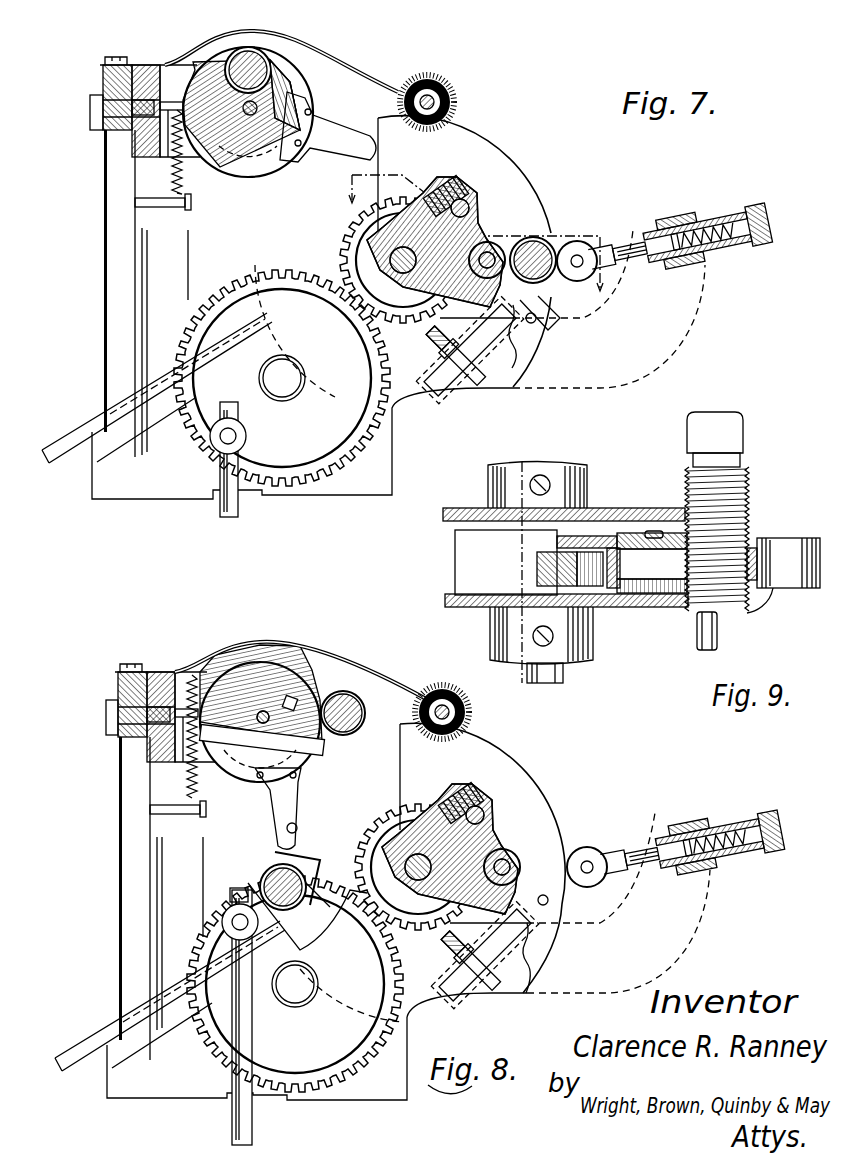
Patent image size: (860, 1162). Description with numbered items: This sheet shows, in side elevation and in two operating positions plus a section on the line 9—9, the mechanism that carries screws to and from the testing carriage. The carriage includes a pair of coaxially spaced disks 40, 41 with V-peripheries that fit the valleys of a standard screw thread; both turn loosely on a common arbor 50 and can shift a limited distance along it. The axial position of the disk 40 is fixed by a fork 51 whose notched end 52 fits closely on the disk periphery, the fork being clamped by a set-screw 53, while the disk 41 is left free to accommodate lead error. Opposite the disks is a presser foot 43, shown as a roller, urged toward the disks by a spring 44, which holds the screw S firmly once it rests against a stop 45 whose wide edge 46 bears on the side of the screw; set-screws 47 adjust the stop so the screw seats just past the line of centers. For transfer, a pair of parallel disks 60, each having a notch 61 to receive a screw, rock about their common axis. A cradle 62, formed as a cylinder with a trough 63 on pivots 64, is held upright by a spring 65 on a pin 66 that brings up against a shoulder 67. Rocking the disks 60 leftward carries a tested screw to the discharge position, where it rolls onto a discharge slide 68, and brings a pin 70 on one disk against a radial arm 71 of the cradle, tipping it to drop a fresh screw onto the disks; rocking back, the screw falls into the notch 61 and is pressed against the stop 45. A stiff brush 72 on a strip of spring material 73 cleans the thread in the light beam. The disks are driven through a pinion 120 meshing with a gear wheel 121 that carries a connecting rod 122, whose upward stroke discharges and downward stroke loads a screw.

In FIG. 9, the disk 40 is at (674, 533).
In FIG. 7, the disk 41 is at (498, 233).
In FIG. 8, the disk 41 is at (512, 853).
In FIG. 9, the disk 41 is at (642, 608).
In FIG. 7, the presser foot 43 is at (588, 243).
In FIG. 8, the presser foot 43 is at (590, 848).
In FIG. 9, the presser foot 43 is at (787, 547).
In FIG. 7, the spring 44 is at (700, 222).
In FIG. 8, the spring 44 is at (735, 820).
In FIG. 7, the stop 45 is at (528, 343).
In FIG. 8, the stop 45 is at (558, 915).
In FIG. 7, the edge 46 is at (537, 318).
In FIG. 8, the edge 46 is at (544, 893).
In FIG. 7, the set-screws 47 is at (447, 392).
In FIG. 8, the set-screws 47 is at (500, 998).
In FIG. 9, the arbor 50 is at (655, 533).
In FIG. 7, the fork 51 is at (486, 196).
In FIG. 8, the fork 51 is at (500, 838).
In FIG. 9, the fork 51 is at (598, 508).
In FIG. 9, the notched end 52 is at (650, 532).
In FIG. 7, the set-screw 53 is at (440, 178).
In FIG. 8, the set-screw 53 is at (447, 797).
In FIG. 9, the set-screw 53 is at (537, 568).
In FIG. 7, the transfer disks 60 is at (485, 138).
In FIG. 8, the transfer disks 60 is at (500, 748).
In FIG. 9, the transfer disks 60 is at (467, 508).
In FIG. 7, the notch 61 is at (528, 238).
In FIG. 8, the notch 61 is at (262, 870).
In FIG. 7, the cradle 62 is at (207, 60).
In FIG. 8, the cradle 62 is at (255, 645).
In FIG. 7, the trough 63 is at (220, 60).
In FIG. 8, the trough 63 is at (292, 648).
In FIG. 7, the pivots 64 is at (278, 60).
In FIG. 8, the pivots 64 is at (343, 713).
In FIG. 7, the spring 65 is at (183, 176).
In FIG. 8, the spring 65 is at (196, 770).
In FIG. 7, the pin 66 is at (172, 93).
In FIG. 8, the pin 66 is at (232, 645).
In FIG. 7, the shoulder 67 is at (174, 160).
In FIG. 8, the shoulder 67 is at (190, 690).
In FIG. 7, the discharge slide 68 is at (88, 420).
In FIG. 8, the discharge slide 68 is at (100, 1022).
In FIG. 7, the pin 70 is at (545, 292).
In FIG. 8, the pin 70 is at (299, 828).
In FIG. 7, the radial arm 71 is at (348, 136).
In FIG. 8, the radial arm 71 is at (300, 803).
In FIG. 7, the brush 72 is at (433, 74).
In FIG. 8, the brush 72 is at (440, 682).
In FIG. 7, the strip of spring material 73 is at (351, 70).
In FIG. 8, the strip of spring material 73 is at (318, 650).
In FIG. 7, the pinion 120 is at (340, 262).
In FIG. 8, the pinion 120 is at (352, 828).
In FIG. 7, the gear wheel 121 is at (242, 277).
In FIG. 8, the gear wheel 121 is at (203, 1027).
In FIG. 7, the connecting rod 122 is at (218, 510).
In FIG. 8, the connecting rod 122 is at (235, 1127).
In FIG. 7, the section line 9 is at (470, 242).
In FIG. 7, the screw S is at (270, 56).
In FIG. 8, the screw S is at (358, 698).
In FIG. 9, the screw S is at (735, 560).